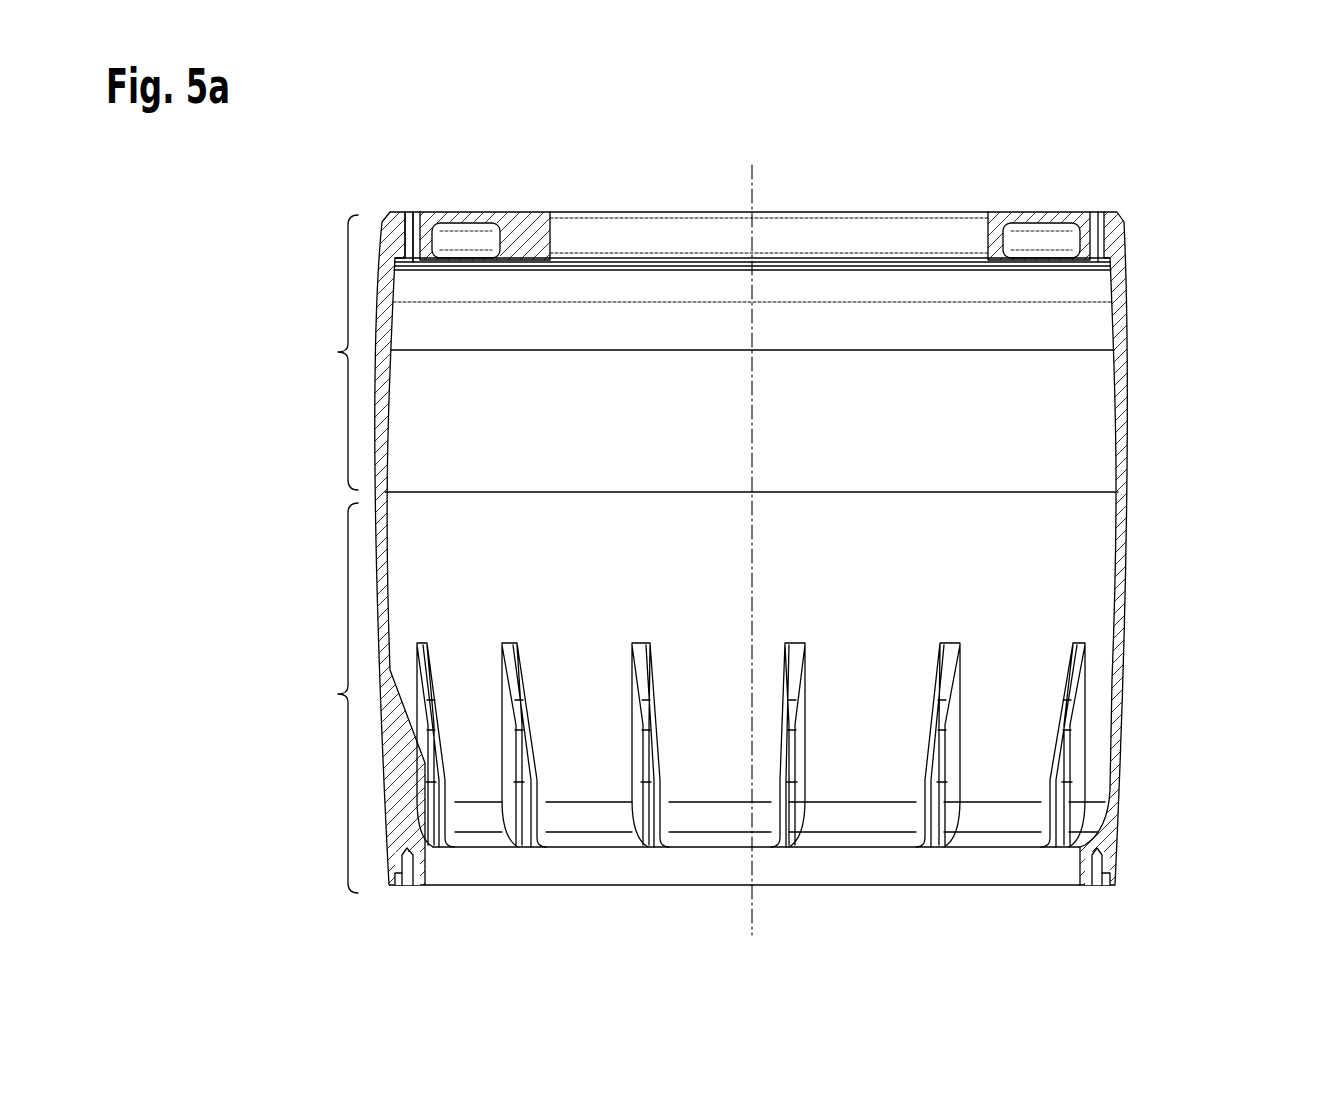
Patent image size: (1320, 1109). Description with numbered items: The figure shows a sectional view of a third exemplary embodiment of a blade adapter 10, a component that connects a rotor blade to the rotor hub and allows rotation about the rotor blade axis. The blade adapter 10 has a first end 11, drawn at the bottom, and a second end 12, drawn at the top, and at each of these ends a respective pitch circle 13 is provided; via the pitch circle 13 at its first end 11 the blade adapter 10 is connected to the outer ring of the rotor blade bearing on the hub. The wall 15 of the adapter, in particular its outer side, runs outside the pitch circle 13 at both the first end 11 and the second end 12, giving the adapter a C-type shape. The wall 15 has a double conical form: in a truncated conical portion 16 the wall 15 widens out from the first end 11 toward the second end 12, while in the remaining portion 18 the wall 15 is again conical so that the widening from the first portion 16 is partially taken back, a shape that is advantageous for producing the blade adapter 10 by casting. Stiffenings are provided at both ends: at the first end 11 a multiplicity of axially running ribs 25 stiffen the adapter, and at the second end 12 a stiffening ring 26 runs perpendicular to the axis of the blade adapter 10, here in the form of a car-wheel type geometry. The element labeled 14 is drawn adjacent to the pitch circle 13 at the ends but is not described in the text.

The blade adapter 10 is at (839, 516).
The first end 11 is at (880, 912).
The second end 12 is at (917, 192).
The pitch circle 13 is at (412, 212).
The slot / receiving groove 14 is at (428, 212).
The wall 15 is at (385, 568).
The truncated conical portion 16 is at (327, 698).
The remaining portion 18 is at (327, 352).
The axially running ribs 25 is at (524, 710).
The stiffening ring 26 is at (539, 222).